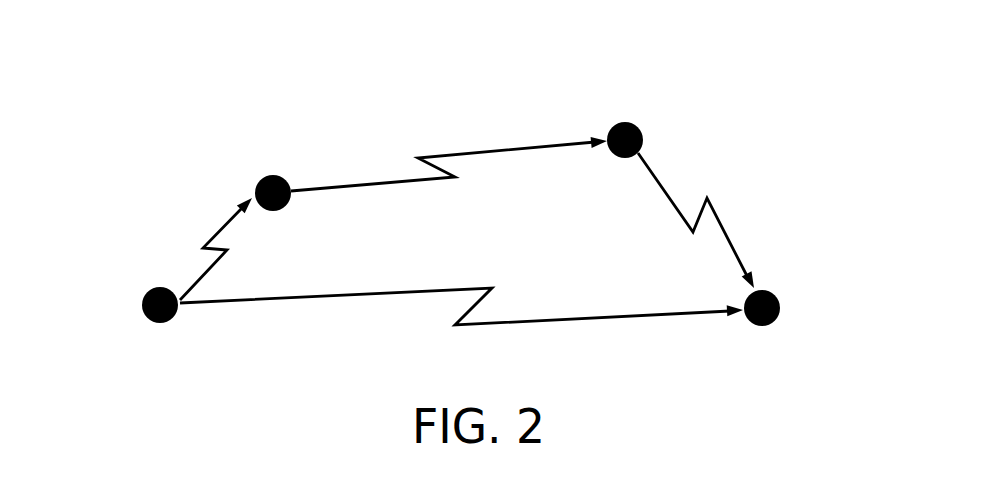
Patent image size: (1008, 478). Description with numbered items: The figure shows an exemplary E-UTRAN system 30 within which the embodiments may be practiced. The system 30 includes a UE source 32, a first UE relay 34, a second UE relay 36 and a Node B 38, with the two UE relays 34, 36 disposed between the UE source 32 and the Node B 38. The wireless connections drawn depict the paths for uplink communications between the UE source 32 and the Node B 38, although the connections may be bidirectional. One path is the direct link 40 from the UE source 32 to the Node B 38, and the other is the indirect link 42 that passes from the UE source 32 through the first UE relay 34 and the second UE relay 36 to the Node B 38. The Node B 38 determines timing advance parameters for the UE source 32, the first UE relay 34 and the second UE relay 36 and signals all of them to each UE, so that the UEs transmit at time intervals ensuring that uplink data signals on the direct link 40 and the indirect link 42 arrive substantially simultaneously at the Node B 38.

The E-UTRAN system 30 is at (140, 120).
The UE source 32 is at (163, 327).
The first UE relay 34 is at (261, 199).
The second UE relay 36 is at (511, 117).
The Node B 38 is at (758, 330).
The direct link 40 is at (478, 327).
The indirect link 42 is at (663, 175).